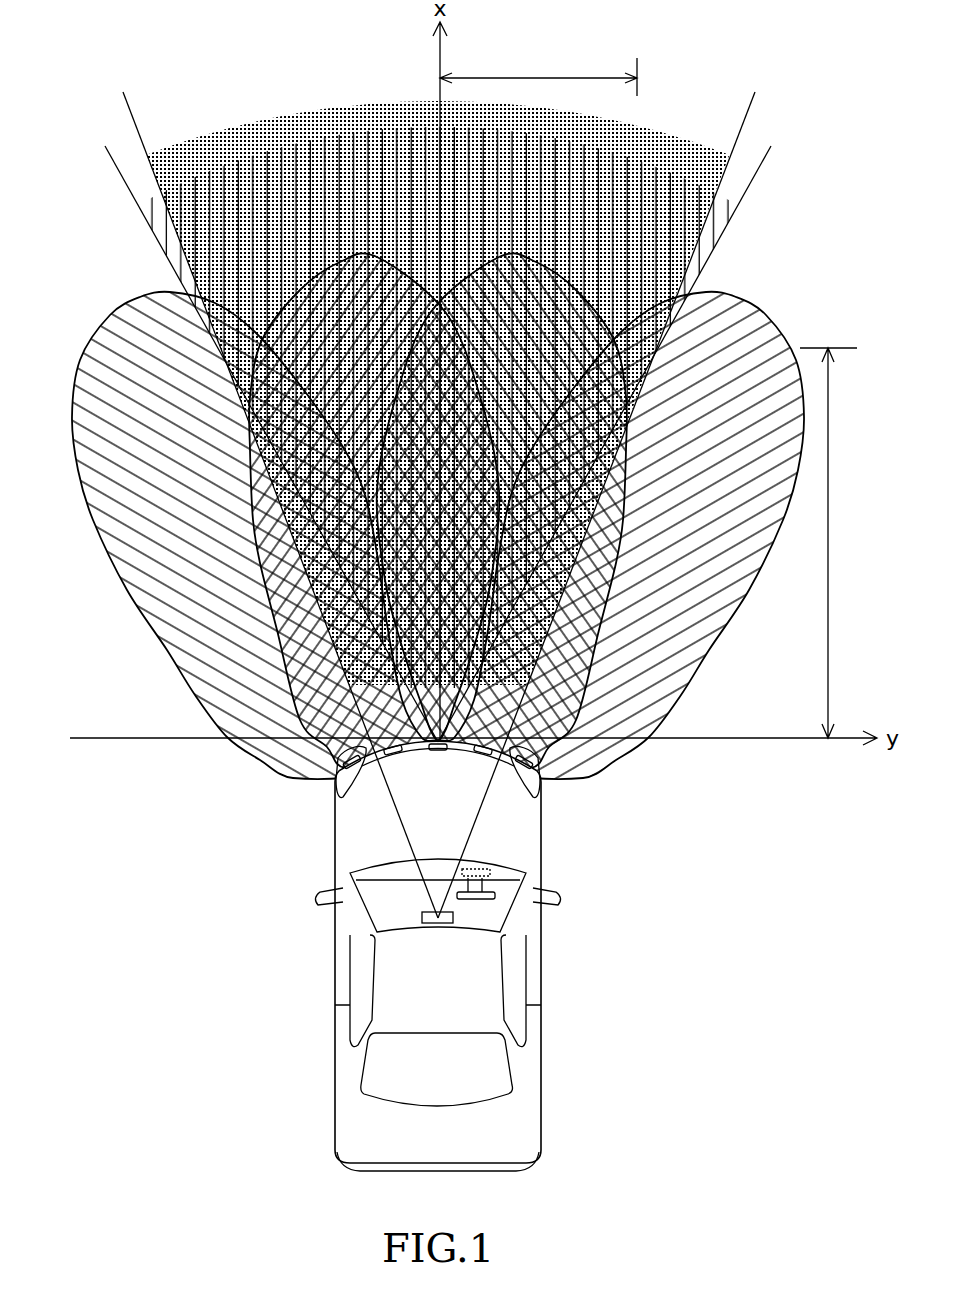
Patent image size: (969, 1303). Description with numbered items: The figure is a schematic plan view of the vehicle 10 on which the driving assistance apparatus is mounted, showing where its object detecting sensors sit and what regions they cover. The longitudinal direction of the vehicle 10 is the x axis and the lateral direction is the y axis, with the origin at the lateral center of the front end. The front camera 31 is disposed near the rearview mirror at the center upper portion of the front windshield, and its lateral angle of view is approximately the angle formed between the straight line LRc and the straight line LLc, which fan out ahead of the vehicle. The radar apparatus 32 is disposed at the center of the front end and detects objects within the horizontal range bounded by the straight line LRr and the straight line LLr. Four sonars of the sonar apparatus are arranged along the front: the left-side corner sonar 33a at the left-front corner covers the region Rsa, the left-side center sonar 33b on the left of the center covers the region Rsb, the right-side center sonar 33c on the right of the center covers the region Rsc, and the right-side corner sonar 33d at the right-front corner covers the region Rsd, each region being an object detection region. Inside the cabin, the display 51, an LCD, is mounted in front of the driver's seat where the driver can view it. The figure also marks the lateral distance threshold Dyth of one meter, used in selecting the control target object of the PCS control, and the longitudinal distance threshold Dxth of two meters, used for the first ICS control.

The vehicle 10 is at (335, 1085).
The front camera 31 is at (453, 917).
The radar apparatus 32 is at (436, 748).
The left-side corner sonar 33a is at (350, 764).
The left-side center sonar 33b is at (390, 750).
The right-side center sonar 33c is at (486, 750).
The right-side corner sonar 33d is at (526, 764).
The display 51 is at (492, 872).
The region Rsa is at (240, 760).
The region Rsb is at (270, 688).
The region Rsc is at (600, 688).
The region Rsd is at (620, 760).
The straight line LLc is at (128, 100).
The straight line LRc is at (750, 100).
The straight line LLr is at (120, 173).
The straight line LRr is at (758, 173).
The longitudinal distance threshold Dxth is at (826, 543).
The lateral distance threshold Dyth is at (538, 72).